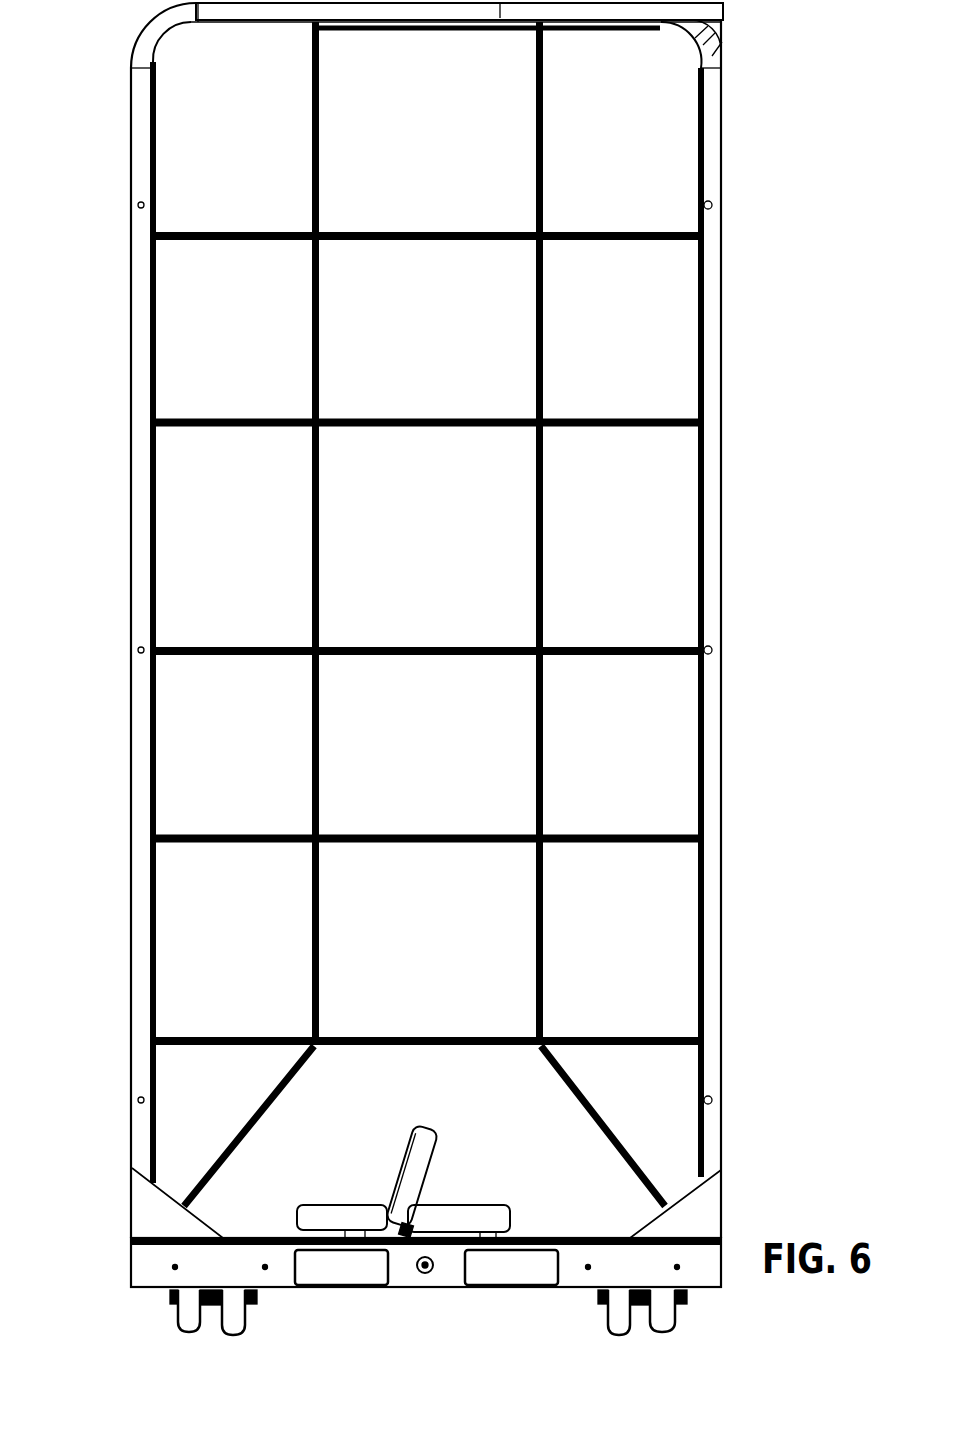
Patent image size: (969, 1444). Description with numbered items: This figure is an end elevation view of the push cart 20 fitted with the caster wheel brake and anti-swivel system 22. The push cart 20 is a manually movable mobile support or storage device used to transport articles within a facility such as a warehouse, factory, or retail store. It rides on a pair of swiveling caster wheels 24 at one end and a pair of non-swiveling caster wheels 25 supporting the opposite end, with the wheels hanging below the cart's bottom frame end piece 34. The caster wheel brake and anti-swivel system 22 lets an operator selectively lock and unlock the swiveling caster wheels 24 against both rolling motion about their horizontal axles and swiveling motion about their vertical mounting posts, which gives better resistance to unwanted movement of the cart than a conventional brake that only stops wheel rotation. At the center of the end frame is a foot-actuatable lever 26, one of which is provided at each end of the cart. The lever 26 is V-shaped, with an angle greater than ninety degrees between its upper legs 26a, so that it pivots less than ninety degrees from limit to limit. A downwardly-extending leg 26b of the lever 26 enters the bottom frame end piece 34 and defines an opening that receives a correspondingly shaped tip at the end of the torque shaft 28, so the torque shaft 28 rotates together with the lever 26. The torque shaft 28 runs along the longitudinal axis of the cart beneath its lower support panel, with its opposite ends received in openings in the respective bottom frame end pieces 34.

The push cart 20 is at (757, 200).
The caster wheel brake and anti-swivel system 22 is at (430, 1290).
The swiveling caster wheels 24 is at (237, 1327).
The non-swiveling caster wheels 25 is at (187, 1325).
The foot-actuatable lever 26 is at (397, 1172).
The upper legs 26a is at (415, 1166).
The downwardly-extending leg 26b is at (413, 1231).
The torque shaft 28 is at (435, 1265).
The bottom frame end pieces 34 is at (136, 1263).